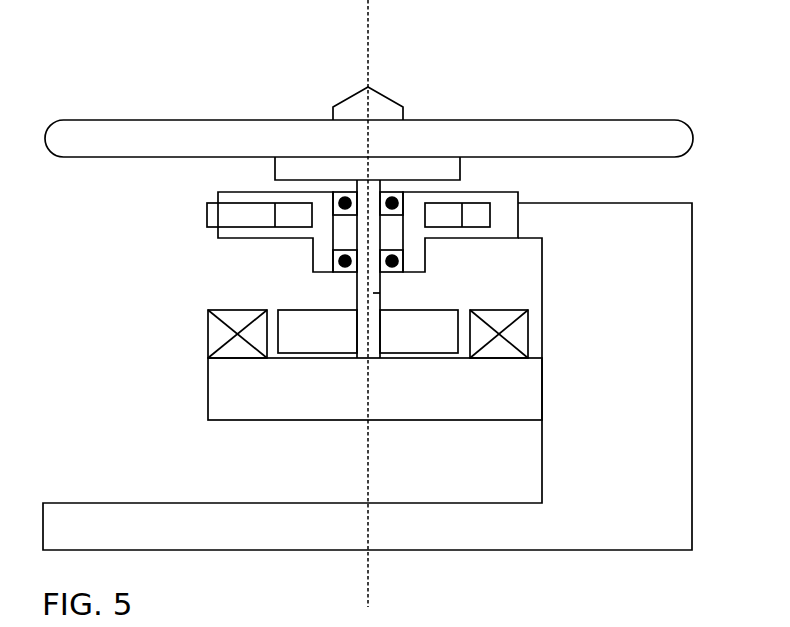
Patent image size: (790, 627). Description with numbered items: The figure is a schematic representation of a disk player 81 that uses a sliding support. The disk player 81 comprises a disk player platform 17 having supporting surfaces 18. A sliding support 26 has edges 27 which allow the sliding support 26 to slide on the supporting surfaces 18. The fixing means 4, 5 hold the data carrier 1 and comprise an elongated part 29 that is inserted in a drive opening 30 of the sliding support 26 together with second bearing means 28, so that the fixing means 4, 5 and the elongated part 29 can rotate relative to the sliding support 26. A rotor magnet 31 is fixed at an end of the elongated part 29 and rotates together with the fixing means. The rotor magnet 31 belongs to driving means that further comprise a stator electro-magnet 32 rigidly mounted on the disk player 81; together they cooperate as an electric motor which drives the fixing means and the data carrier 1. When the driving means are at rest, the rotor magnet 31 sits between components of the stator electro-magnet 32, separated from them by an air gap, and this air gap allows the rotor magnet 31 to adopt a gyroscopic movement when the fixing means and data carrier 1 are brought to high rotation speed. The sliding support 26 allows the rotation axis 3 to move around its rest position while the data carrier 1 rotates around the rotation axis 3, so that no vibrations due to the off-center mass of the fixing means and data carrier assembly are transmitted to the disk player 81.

The data carrier 1 is at (381, 116).
The rotation axis 3 is at (337, 303).
The fixing means 4 is at (395, 125).
The fixing means 5 is at (408, 74).
The disk player platform 17 is at (502, 220).
The supporting surfaces 18 is at (471, 245).
The sliding support 26 is at (225, 131).
The edges 27 is at (231, 231).
The second bearing means 28 is at (317, 241).
The elongated part 29 is at (380, 293).
The drive opening 30 is at (325, 269).
The rotor magnet 31 is at (369, 395).
The stator electro-magnet 32 is at (337, 365).
The disk player 81 is at (367, 376).